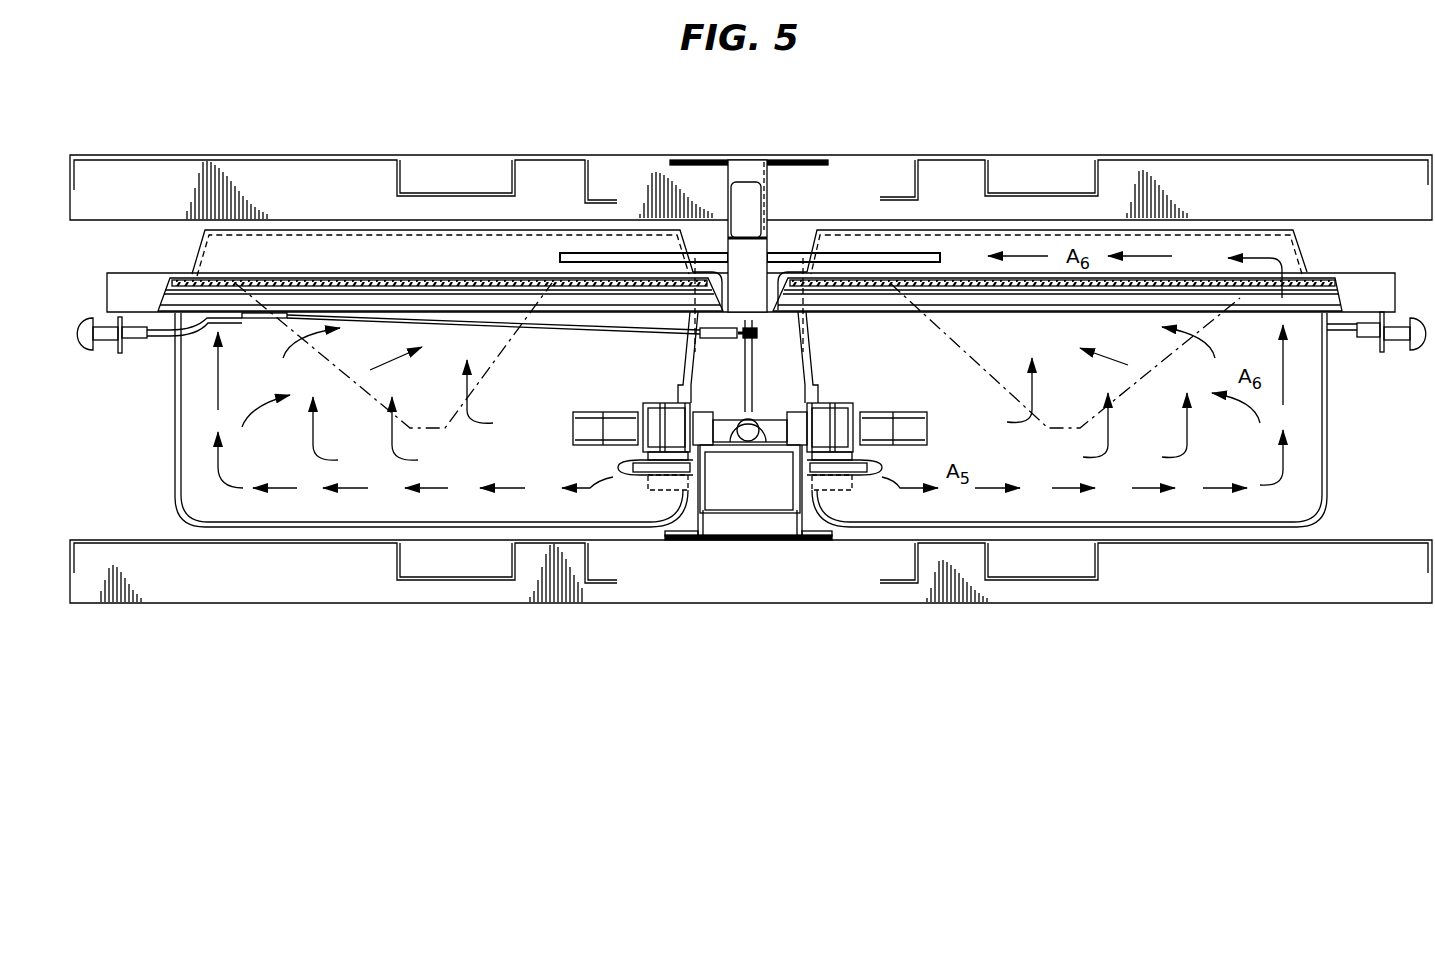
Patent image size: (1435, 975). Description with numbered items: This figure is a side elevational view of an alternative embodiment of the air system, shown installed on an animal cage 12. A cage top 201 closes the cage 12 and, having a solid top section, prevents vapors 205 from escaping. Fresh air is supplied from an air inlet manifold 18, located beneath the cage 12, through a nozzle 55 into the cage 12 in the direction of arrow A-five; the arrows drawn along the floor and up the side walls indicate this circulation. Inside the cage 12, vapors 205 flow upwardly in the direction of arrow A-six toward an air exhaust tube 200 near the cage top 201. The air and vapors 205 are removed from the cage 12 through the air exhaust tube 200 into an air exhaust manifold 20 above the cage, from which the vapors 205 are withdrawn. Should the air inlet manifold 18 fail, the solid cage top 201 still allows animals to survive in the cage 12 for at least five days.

The cage 12 is at (307, 508).
The air inlet manifold 18 is at (749, 497).
The air exhaust manifold 20 is at (748, 250).
The nozzle 55 is at (880, 470).
The air exhaust tube 200 is at (875, 250).
The cage top 201 is at (978, 230).
The vapors 205 is at (1288, 428).